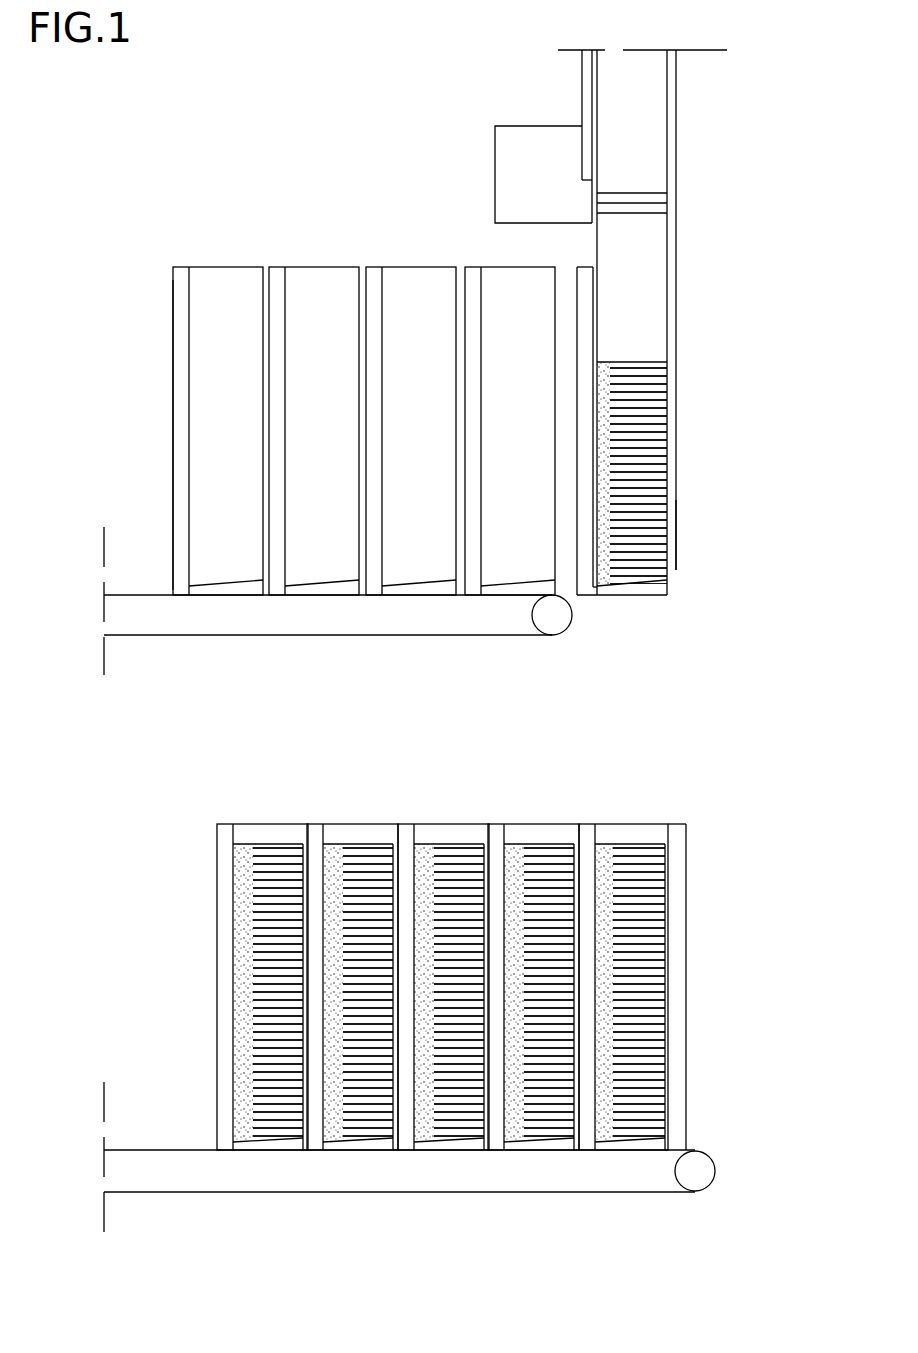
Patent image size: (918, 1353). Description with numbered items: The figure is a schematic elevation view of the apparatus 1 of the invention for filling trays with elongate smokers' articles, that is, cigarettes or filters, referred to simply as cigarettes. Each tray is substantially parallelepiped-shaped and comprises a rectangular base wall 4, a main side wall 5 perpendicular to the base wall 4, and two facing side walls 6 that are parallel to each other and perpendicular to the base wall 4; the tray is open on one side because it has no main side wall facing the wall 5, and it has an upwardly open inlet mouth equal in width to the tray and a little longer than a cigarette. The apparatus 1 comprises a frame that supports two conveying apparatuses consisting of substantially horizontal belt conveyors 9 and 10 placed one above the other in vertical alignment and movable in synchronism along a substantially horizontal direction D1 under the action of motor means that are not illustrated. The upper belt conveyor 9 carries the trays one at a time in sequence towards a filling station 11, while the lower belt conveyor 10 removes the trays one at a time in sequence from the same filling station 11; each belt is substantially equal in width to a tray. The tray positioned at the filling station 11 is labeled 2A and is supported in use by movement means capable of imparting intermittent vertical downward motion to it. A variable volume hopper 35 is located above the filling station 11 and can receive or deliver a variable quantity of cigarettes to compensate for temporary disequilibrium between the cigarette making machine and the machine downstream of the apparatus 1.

The apparatus 1 is at (752, 452).
The tray at the filling station 2A is at (690, 401).
The base wall 4 is at (237, 587).
The main side wall 5 is at (170, 405).
The facing side walls 6 is at (226, 368).
The belt conveyor 9 is at (150, 635).
The belt conveyor 10 is at (222, 1192).
The filling station 11 is at (688, 520).
The variable volume hopper 35 is at (688, 96).
The horizontal direction D1 is at (198, 159).